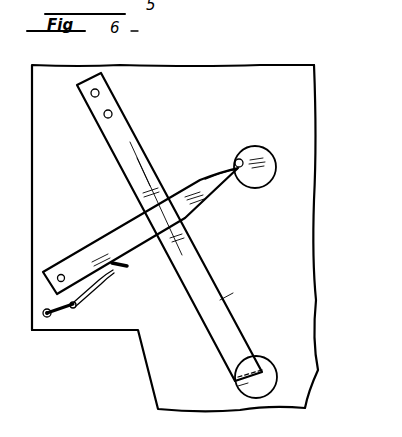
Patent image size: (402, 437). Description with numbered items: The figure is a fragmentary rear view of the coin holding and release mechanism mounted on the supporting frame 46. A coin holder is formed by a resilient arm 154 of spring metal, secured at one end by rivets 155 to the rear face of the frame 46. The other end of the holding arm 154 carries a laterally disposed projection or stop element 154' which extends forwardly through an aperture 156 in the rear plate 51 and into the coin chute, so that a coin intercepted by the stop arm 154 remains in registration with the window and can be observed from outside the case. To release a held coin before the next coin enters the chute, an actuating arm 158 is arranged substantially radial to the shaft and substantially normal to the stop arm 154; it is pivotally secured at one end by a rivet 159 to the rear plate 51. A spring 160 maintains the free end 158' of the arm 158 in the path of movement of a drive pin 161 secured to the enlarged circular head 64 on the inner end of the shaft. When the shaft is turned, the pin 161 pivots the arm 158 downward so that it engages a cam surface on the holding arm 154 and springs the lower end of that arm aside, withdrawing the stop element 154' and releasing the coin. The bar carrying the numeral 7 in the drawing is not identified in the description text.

The lever bar 7 is at (169, 227).
The frame 46 is at (295, 97).
The rear plate 51 is at (307, 195).
The enlarged circular head 64 is at (262, 160).
The resilient arm 154 is at (248, 274).
The stop element 154' is at (270, 364).
The rivets 155 is at (104, 114).
The aperture 156 is at (238, 386).
The actuating arm 158 is at (140, 231).
The free end 158' is at (235, 199).
The rivet 159 is at (61, 273).
The spring 160 is at (100, 288).
The drive pin 161 is at (235, 161).